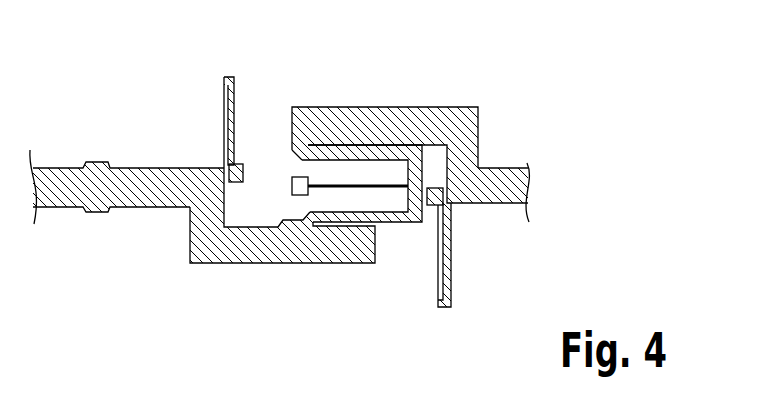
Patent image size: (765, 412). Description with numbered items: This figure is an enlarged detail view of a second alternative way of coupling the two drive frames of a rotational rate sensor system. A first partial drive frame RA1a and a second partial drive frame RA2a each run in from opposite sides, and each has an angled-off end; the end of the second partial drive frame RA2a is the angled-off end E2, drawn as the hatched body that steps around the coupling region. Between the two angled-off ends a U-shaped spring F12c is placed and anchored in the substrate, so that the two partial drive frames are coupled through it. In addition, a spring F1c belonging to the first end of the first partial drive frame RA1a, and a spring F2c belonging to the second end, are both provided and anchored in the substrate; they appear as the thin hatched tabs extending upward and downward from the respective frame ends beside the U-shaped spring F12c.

The angled-off end E2 is at (370, 127).
The first partial drive frame RA1a is at (98, 185).
The second partial drive frame RA2a is at (505, 178).
The spring F1c is at (230, 77).
The spring F2c is at (452, 268).
The U-shaped spring F12c is at (407, 218).